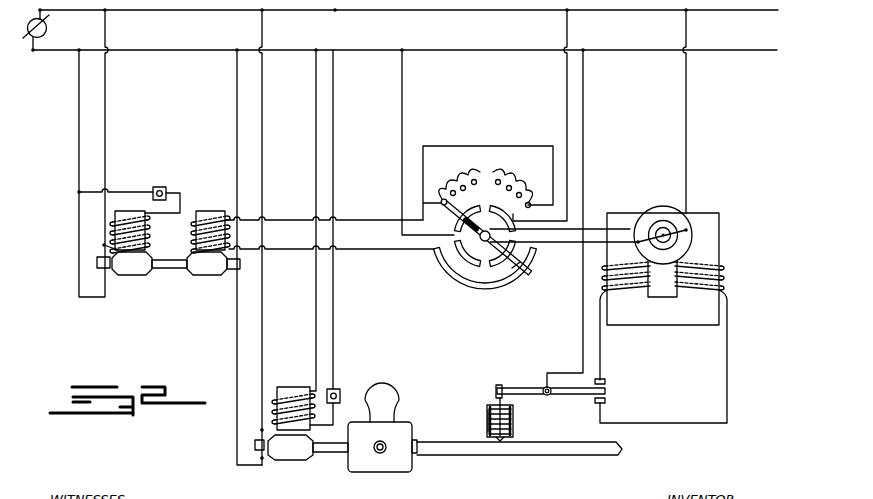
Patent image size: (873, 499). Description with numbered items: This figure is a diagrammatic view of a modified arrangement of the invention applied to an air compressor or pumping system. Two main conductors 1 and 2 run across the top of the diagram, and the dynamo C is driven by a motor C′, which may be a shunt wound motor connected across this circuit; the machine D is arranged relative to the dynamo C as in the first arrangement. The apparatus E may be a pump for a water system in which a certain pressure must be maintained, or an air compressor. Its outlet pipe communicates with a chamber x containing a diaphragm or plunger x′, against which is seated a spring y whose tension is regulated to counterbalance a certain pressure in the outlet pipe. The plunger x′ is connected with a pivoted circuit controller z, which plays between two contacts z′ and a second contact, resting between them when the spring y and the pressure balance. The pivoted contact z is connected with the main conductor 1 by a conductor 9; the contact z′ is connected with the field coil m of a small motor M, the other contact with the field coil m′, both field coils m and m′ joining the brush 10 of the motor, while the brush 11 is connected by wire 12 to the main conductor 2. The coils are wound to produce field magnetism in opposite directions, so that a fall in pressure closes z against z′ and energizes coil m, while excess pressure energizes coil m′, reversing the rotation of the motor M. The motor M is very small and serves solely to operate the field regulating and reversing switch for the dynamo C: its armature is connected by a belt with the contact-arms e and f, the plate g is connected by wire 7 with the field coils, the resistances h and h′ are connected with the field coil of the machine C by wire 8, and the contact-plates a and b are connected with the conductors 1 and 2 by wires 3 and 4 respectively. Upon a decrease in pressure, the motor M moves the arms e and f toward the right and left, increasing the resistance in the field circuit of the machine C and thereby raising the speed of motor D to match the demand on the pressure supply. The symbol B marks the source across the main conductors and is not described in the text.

The main conductor 1 is at (404, 43).
The main conductor 2 is at (408, 6).
The wire 3 is at (428, 142).
The wire 4 is at (540, 115).
The wire 7 is at (331, 258).
The wire 8 is at (314, 212).
The conductor 9 is at (572, 219).
The brush 10 is at (647, 238).
The brush 11 is at (698, 231).
The wire 12 is at (695, 111).
The battery / generator B is at (42, 30).
The dynamo C is at (213, 255).
The motor C′ is at (124, 255).
The motor D is at (301, 436).
The apparatus E is at (382, 427).
The small motor M is at (663, 259).
The contact-plate a is at (458, 236).
The contact-plate b is at (502, 233).
The contact-arm e is at (486, 232).
The contact-arm f is at (511, 271).
The plate g is at (497, 291).
The resistance h is at (457, 179).
The resistance h′ is at (513, 181).
The field coil m is at (603, 282).
The field coil m′ is at (726, 294).
The chamber x is at (506, 421).
The plunger x′ is at (513, 436).
The spring y is at (480, 421).
The pivoted circuit controller z is at (550, 403).
The contact z′ is at (609, 383).